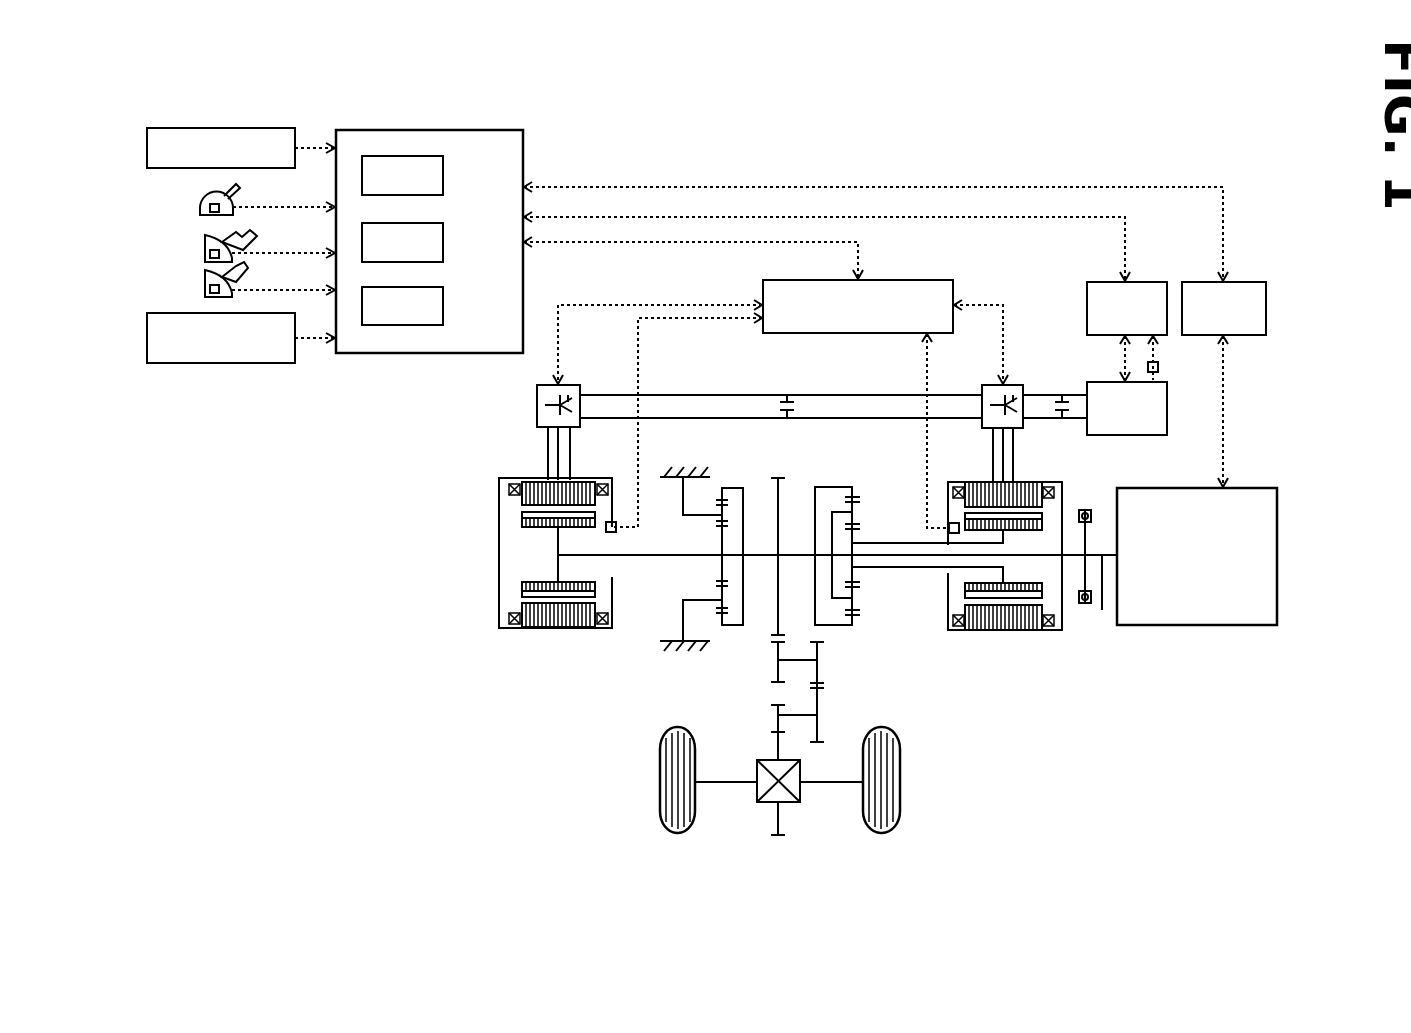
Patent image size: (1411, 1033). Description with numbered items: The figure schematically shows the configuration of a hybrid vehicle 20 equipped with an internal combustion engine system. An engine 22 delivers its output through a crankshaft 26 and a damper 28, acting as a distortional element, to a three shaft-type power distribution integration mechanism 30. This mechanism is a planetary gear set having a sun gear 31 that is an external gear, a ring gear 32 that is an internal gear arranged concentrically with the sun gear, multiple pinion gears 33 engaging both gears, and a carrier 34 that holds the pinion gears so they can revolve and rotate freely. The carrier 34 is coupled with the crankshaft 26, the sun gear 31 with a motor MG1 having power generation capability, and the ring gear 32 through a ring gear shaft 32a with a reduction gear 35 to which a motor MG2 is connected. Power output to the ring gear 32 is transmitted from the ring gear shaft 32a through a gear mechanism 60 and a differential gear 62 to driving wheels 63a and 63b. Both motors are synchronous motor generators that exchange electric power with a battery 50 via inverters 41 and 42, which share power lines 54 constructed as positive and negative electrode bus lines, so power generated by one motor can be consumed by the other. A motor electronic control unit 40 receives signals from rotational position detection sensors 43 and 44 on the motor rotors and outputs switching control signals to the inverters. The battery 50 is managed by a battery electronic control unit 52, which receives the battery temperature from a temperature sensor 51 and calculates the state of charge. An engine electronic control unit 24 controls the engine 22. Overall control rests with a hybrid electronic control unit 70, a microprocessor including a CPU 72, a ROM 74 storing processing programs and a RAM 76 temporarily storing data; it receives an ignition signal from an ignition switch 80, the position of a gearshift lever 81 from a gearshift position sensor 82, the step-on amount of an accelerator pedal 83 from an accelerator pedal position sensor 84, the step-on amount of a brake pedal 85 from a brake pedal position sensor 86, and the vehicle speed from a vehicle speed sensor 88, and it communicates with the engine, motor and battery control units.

The hybrid vehicle 20 is at (1042, 154).
The engine 22 is at (1277, 542).
The engine electronic control unit 24 is at (1240, 282).
The crankshaft 26 is at (1102, 610).
The damper 28 is at (1087, 605).
The power distribution integration mechanism 30 is at (909, 541).
The sun gear 31 is at (855, 572).
The ring gear 32 is at (855, 620).
The ring gear shaft 32a is at (762, 555).
The pinion gears 33 is at (855, 596).
The carrier 34 is at (826, 522).
The reduction gear 35 is at (732, 468).
The motor electronic control unit 40 is at (898, 280).
The inverter 41 is at (1020, 385).
The inverter 42 is at (565, 385).
The rotational position detection sensor 43 is at (951, 520).
The rotational position detection sensor 44 is at (611, 520).
The battery 50 is at (1128, 436).
The temperature sensor 51 is at (1159, 368).
The battery electronic control unit 52 is at (1100, 282).
The power lines 54 is at (863, 395).
The gear mechanism 60 is at (866, 703).
The differential gear 62 is at (800, 792).
The driving wheel 63a is at (657, 813).
The driving wheel 63b is at (903, 813).
The hybrid electronic control unit 70 is at (432, 130).
The CPU 72 is at (443, 177).
The ROM 74 is at (443, 242).
The RAM 76 is at (443, 307).
The ignition switch 80 is at (147, 140).
The gearshift lever 81 is at (232, 193).
The gearshift position sensor 82 is at (208, 208).
The accelerator pedal 83 is at (240, 238).
The accelerator pedal position sensor 84 is at (208, 254).
The brake pedal 85 is at (230, 272).
The brake pedal position sensor 86 is at (208, 290).
The vehicle speed sensor 88 is at (147, 332).
The motor MG1 is at (1034, 631).
The motor MG2 is at (533, 478).